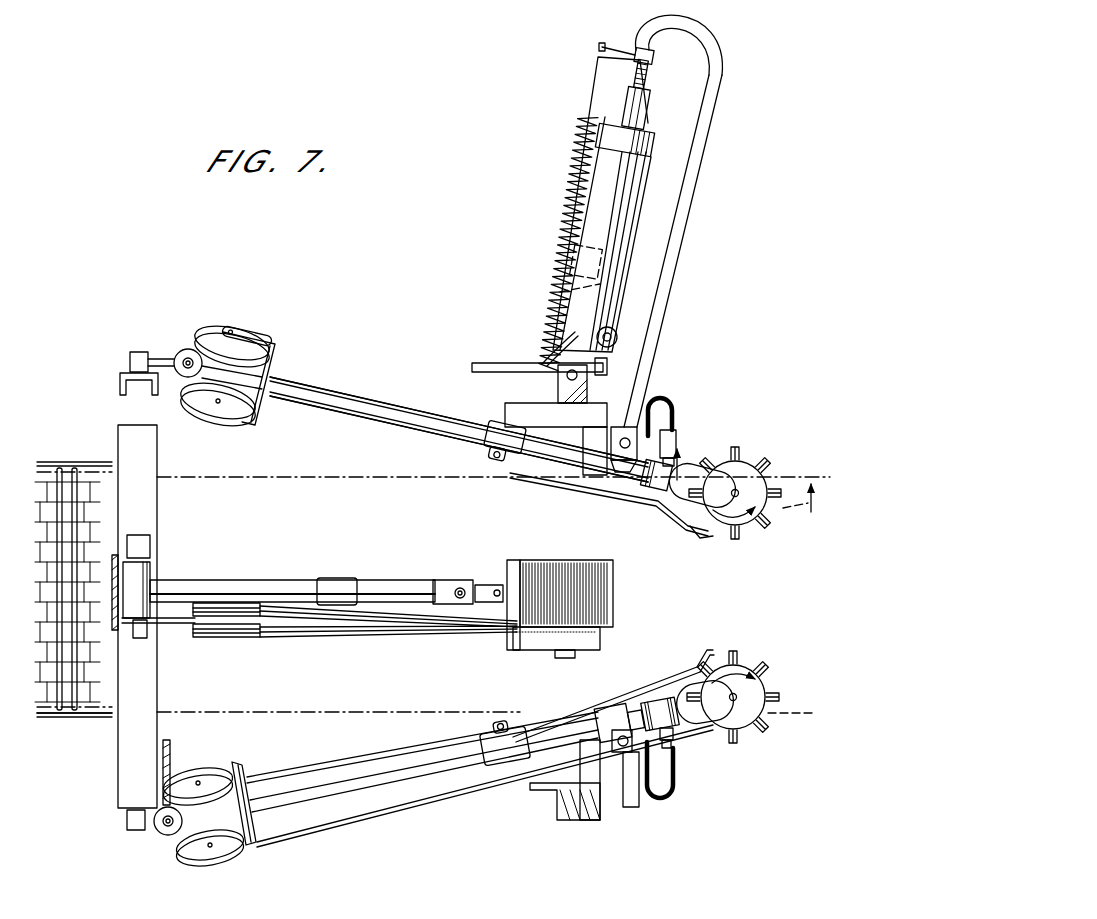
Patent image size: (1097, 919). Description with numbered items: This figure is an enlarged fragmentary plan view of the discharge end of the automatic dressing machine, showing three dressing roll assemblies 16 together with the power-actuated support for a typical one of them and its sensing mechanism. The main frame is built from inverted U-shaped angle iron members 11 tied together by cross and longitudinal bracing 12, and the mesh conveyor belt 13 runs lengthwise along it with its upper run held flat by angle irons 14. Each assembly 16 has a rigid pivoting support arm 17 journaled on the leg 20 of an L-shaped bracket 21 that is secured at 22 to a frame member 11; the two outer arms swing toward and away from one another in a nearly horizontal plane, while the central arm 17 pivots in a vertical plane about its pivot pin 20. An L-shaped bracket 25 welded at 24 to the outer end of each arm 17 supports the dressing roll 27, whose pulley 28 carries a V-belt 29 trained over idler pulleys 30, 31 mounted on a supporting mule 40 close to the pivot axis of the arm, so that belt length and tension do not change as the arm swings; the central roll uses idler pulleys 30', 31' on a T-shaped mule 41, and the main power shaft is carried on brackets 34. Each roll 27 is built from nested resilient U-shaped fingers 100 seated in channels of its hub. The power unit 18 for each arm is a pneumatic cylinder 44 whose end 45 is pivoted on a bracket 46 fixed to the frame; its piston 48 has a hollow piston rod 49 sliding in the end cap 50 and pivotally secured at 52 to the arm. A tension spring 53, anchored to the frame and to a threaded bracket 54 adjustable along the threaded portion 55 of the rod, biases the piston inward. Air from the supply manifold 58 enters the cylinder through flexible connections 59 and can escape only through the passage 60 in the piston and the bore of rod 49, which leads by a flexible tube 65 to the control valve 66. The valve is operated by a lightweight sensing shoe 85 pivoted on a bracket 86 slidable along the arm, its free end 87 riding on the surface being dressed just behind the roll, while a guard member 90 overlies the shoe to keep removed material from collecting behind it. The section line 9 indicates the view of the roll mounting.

The section line 9- 9 is at (747, 459).
The inverted U-shaped angle iron member 11 is at (120, 384).
The cross and longitudinal bracing 12 is at (514, 404).
The conveyor belt 13 is at (59, 470).
The angle iron 14 is at (58, 716).
The dressing roll assembly 16 is at (413, 303).
The pivoting support arm 17 is at (355, 395).
The power unit 18 is at (703, 163).
The leg of L-shaped bracket 20 is at (188, 349).
The L-shaped bracket 21 is at (140, 352).
The securement 22 is at (128, 360).
The welding 24 is at (510, 560).
The L-shaped bracket 25 is at (728, 480).
The dressing roll 27 is at (615, 607).
The pulley 28 is at (763, 518).
The V-belt 29 is at (715, 442).
The idler pulley 30 is at (210, 593).
The idler pulley 30' is at (233, 576).
The idler pulley 31 is at (223, 597).
The idler pulley 31' is at (227, 658).
The bracket 34 is at (113, 555).
The supporting mule 40 is at (276, 343).
The mule 41 is at (178, 626).
The pneumatic cylinder 44 is at (625, 243).
The cylinder end 45 is at (560, 345).
The bracket 46 is at (585, 385).
The piston 48 is at (560, 292).
The hollow piston rod 49 is at (620, 194).
The cylinder end cap 50 is at (650, 108).
The pivotal connection 52 is at (617, 462).
The tension spring 53 is at (565, 184).
The threaded bracket 54 is at (635, 48).
The threaded portion 55 is at (648, 74).
The air supply manifold 58 is at (496, 363).
The flexible connection 59 is at (618, 338).
The passage 60 is at (572, 263).
The flexible tube 65 is at (663, 393).
The control valve 66 is at (680, 432).
The sensing shoe 85 is at (648, 503).
The bracket 86 is at (492, 728).
The free end of shoe 87 is at (707, 540).
The guard member 90 is at (685, 530).
The resilient U-shaped finger 100 is at (765, 468).